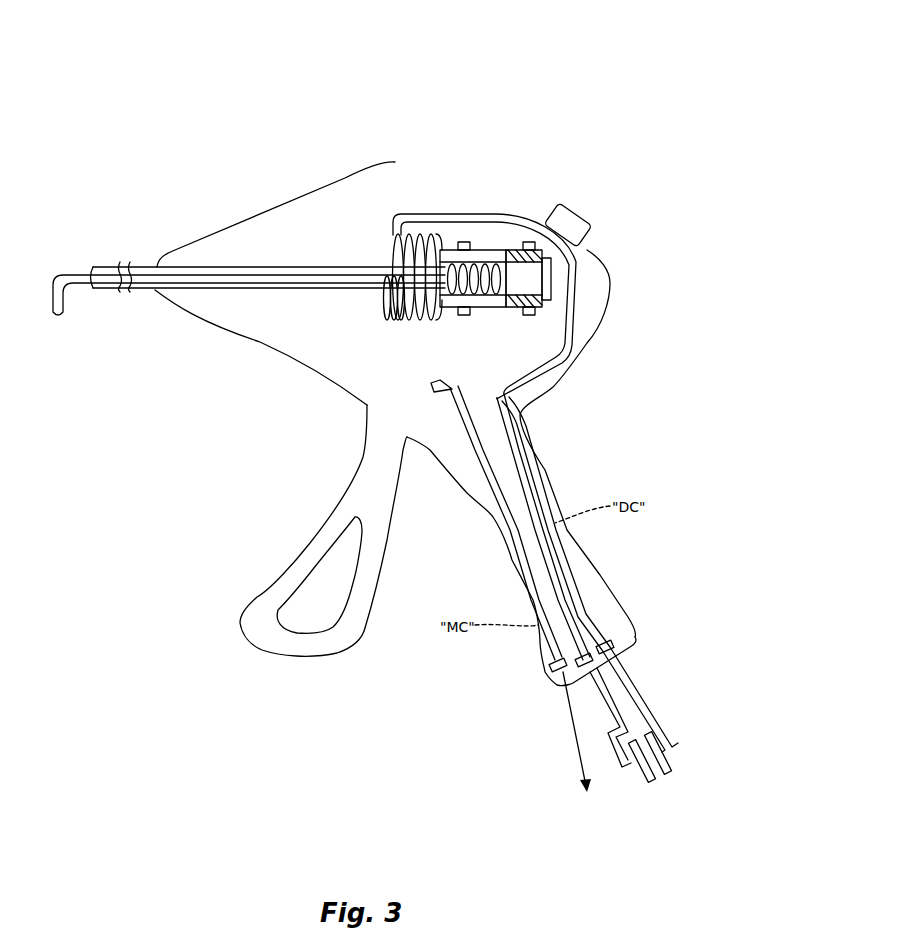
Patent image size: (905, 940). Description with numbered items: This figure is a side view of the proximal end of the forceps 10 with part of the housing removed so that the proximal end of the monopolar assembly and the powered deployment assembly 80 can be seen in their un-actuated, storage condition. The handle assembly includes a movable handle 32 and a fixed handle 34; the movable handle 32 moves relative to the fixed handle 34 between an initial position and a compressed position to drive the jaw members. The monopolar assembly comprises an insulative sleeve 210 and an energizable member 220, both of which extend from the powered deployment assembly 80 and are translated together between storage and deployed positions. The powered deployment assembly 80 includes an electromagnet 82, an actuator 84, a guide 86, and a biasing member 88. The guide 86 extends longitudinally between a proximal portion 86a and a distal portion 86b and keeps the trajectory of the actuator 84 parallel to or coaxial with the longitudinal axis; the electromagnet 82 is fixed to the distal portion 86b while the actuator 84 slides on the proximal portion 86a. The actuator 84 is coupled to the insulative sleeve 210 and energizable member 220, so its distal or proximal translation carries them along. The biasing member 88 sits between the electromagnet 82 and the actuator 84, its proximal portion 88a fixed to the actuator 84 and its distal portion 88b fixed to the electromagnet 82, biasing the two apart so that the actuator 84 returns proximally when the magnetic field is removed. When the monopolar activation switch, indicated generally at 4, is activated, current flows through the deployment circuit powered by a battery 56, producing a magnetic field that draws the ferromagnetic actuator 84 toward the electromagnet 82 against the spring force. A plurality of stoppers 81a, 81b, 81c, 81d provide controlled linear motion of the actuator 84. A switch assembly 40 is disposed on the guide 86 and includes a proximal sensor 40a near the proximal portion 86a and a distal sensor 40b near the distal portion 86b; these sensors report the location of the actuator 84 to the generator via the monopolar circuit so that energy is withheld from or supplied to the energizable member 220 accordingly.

The surgical instrument 10 is at (265, 140).
The switch assembly 40 is at (371, 112).
The electromagnet 82 is at (417, 232).
The stopper 81c is at (445, 250).
The distal sensor 40b is at (464, 242).
The biasing member 88 is at (484, 250).
The powered deployment assembly 80 is at (493, 212).
The actuator 84 is at (530, 242).
The proximal sensor 40a is at (532, 219).
The button 4 is at (575, 210).
The stopper 81a is at (560, 258).
The proximal portion of guide 86a is at (555, 295).
The stopper 81b is at (548, 311).
The distal portion of guide 86b is at (383, 309).
The distal portion of biasing member 88b is at (447, 307).
The stopper 81d is at (456, 307).
The guide 86 is at (498, 310).
The proximal portion of biasing member 88a is at (522, 312).
The movable handle 32 is at (252, 628).
The fixed handle 34 is at (615, 607).
The battery 56 is at (687, 733).
The energizable member 220 is at (72, 270).
The insulative sleeve 210 is at (110, 263).